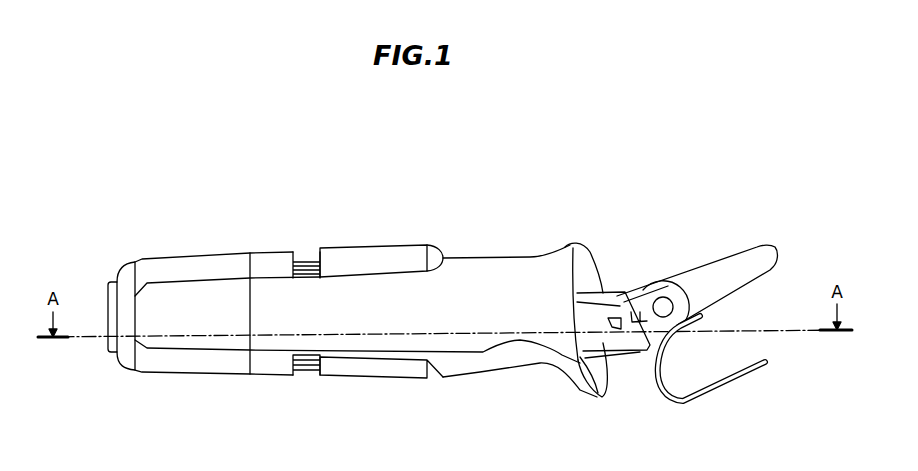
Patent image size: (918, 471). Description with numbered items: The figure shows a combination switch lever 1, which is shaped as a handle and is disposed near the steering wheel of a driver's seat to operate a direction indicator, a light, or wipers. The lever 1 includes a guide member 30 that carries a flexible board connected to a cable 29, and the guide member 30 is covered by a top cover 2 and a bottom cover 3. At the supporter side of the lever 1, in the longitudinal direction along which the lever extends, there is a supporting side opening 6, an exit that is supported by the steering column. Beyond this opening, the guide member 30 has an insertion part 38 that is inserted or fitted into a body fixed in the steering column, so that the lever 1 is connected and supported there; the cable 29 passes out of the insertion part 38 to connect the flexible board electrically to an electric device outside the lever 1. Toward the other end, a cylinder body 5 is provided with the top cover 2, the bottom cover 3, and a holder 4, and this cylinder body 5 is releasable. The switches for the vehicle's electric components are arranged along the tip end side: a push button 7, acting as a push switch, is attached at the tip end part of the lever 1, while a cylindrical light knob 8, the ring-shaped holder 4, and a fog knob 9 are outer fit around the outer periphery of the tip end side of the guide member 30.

The combination switch lever 1 is at (48, 143).
The top cover 2 is at (467, 267).
The bottom cover 3 is at (485, 360).
The holder 4 is at (272, 268).
The cylinder body 5 is at (255, 197).
The supporting side opening 6 is at (585, 268).
The push button 7 is at (107, 297).
The light knob 8 is at (198, 360).
The fog knob 9 is at (307, 374).
The cable 29 is at (747, 373).
The guide member 30 is at (651, 282).
The insertion part 38 is at (723, 270).